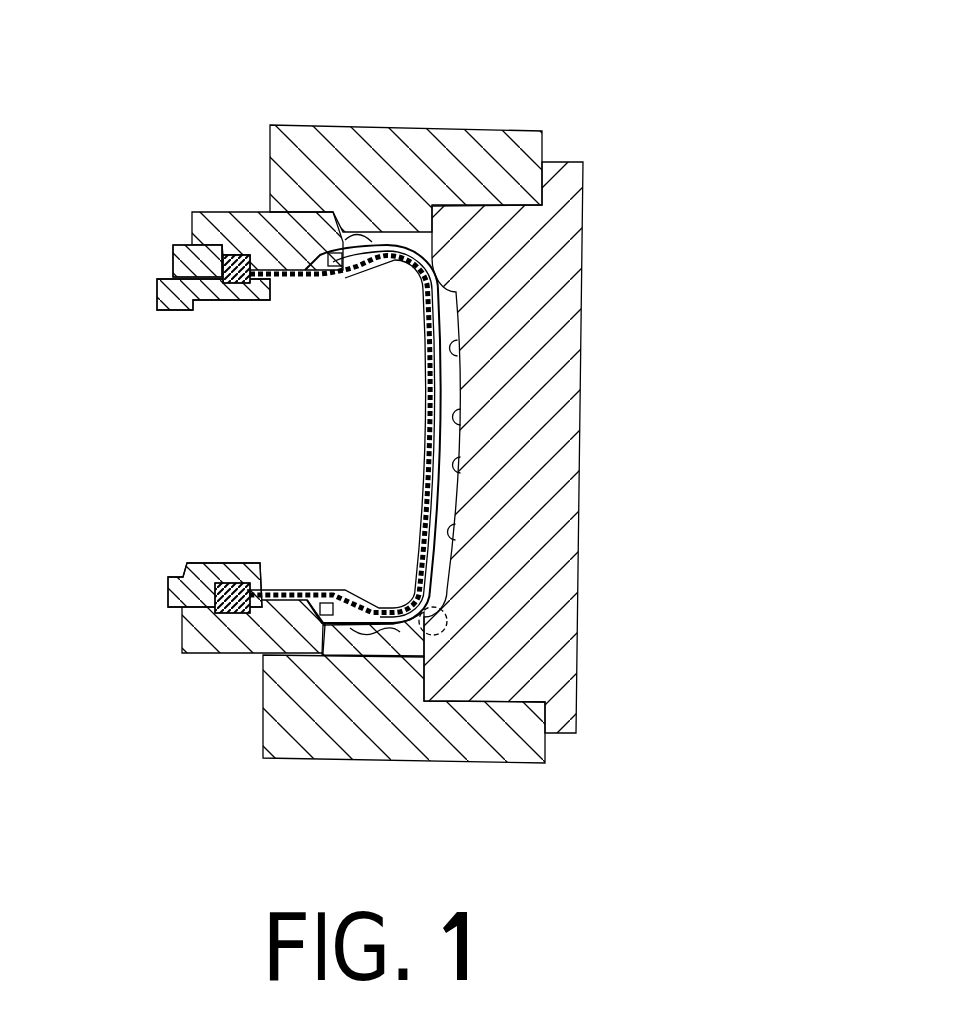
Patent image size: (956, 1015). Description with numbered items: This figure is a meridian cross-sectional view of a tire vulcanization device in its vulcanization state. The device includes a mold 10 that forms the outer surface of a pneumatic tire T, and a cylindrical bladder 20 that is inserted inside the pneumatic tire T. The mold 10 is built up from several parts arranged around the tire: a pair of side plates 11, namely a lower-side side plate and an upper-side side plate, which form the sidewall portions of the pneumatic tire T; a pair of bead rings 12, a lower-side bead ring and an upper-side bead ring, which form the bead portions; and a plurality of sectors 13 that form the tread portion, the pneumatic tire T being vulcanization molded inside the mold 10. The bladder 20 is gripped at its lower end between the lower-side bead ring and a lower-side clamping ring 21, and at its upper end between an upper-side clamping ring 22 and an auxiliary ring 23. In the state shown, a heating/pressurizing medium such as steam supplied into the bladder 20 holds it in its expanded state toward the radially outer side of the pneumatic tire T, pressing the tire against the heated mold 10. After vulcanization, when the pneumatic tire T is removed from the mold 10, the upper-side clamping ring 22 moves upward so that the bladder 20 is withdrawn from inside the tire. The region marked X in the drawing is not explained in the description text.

The mold 10 is at (423, 425).
The side plates 11 is at (343, 127).
The bead rings 12 is at (222, 215).
The sectors 13 is at (570, 270).
The bladder 20 is at (445, 432).
The lower-side clamping ring 21 is at (177, 577).
The upper-side clamping ring 22 is at (182, 307).
The auxiliary ring 23 is at (178, 263).
The pneumatic tire T is at (446, 380).
The parting region X is at (445, 607).